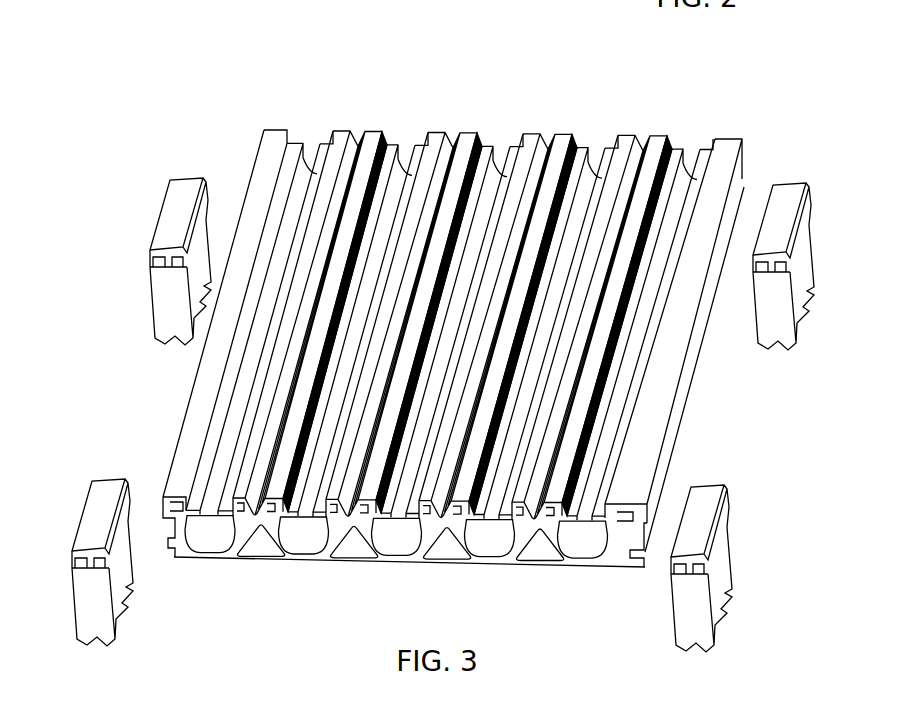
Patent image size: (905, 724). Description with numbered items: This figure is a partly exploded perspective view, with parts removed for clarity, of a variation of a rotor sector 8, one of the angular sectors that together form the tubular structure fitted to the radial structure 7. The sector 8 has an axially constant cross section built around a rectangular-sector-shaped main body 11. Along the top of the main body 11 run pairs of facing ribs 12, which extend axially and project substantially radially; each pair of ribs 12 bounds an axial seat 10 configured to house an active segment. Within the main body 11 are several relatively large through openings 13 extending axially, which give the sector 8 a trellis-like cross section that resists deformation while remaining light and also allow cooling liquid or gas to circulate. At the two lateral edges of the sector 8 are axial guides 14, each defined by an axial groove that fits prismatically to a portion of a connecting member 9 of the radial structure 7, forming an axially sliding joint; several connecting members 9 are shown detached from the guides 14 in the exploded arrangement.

The radial structure 7 is at (728, 601).
The sector 8 is at (549, 72).
The connecting member 9 is at (170, 198).
The axial seat 10 is at (313, 130).
The main body 11 is at (401, 565).
The rib 12 is at (262, 138).
The through opening 13 is at (263, 539).
The axial guide 14 is at (171, 548).